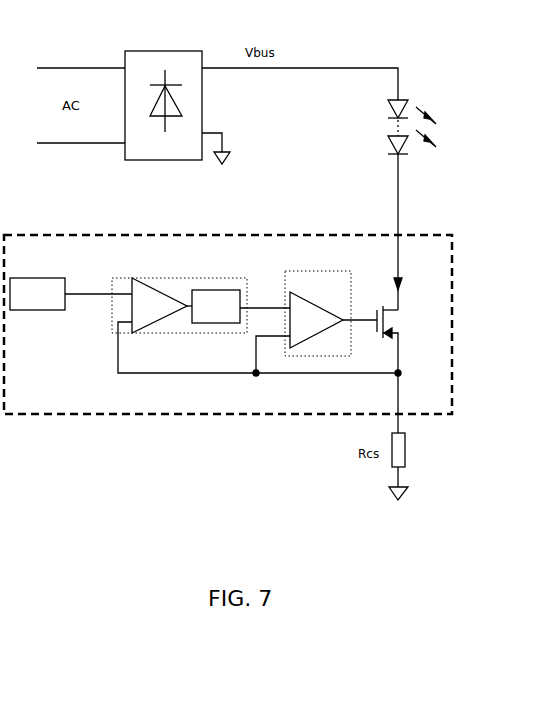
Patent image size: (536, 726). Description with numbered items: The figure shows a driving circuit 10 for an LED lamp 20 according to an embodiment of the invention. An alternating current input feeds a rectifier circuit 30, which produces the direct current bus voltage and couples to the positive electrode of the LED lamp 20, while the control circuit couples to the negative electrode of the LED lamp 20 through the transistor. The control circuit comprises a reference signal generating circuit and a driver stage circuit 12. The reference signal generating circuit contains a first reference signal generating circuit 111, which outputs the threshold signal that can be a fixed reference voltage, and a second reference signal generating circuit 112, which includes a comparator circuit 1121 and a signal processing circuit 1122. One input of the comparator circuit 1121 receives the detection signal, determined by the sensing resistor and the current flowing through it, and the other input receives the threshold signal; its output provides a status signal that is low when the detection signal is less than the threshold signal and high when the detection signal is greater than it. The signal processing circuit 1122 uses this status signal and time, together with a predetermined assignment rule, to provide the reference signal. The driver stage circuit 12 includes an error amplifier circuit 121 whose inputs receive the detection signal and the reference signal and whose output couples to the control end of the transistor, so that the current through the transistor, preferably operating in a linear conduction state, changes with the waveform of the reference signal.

The driving circuit 10 is at (453, 268).
The LED lamp 20 is at (409, 101).
The rectifier circuit 30 is at (166, 51).
The first reference signal generating circuit 111 is at (37, 294).
The second reference signal generating circuit 112 is at (184, 313).
The comparator circuit 1121 is at (162, 290).
The signal processing circuit 1122 is at (216, 306).
The driver stage circuit 12 is at (318, 304).
The error amplifier circuit 121 is at (316, 306).